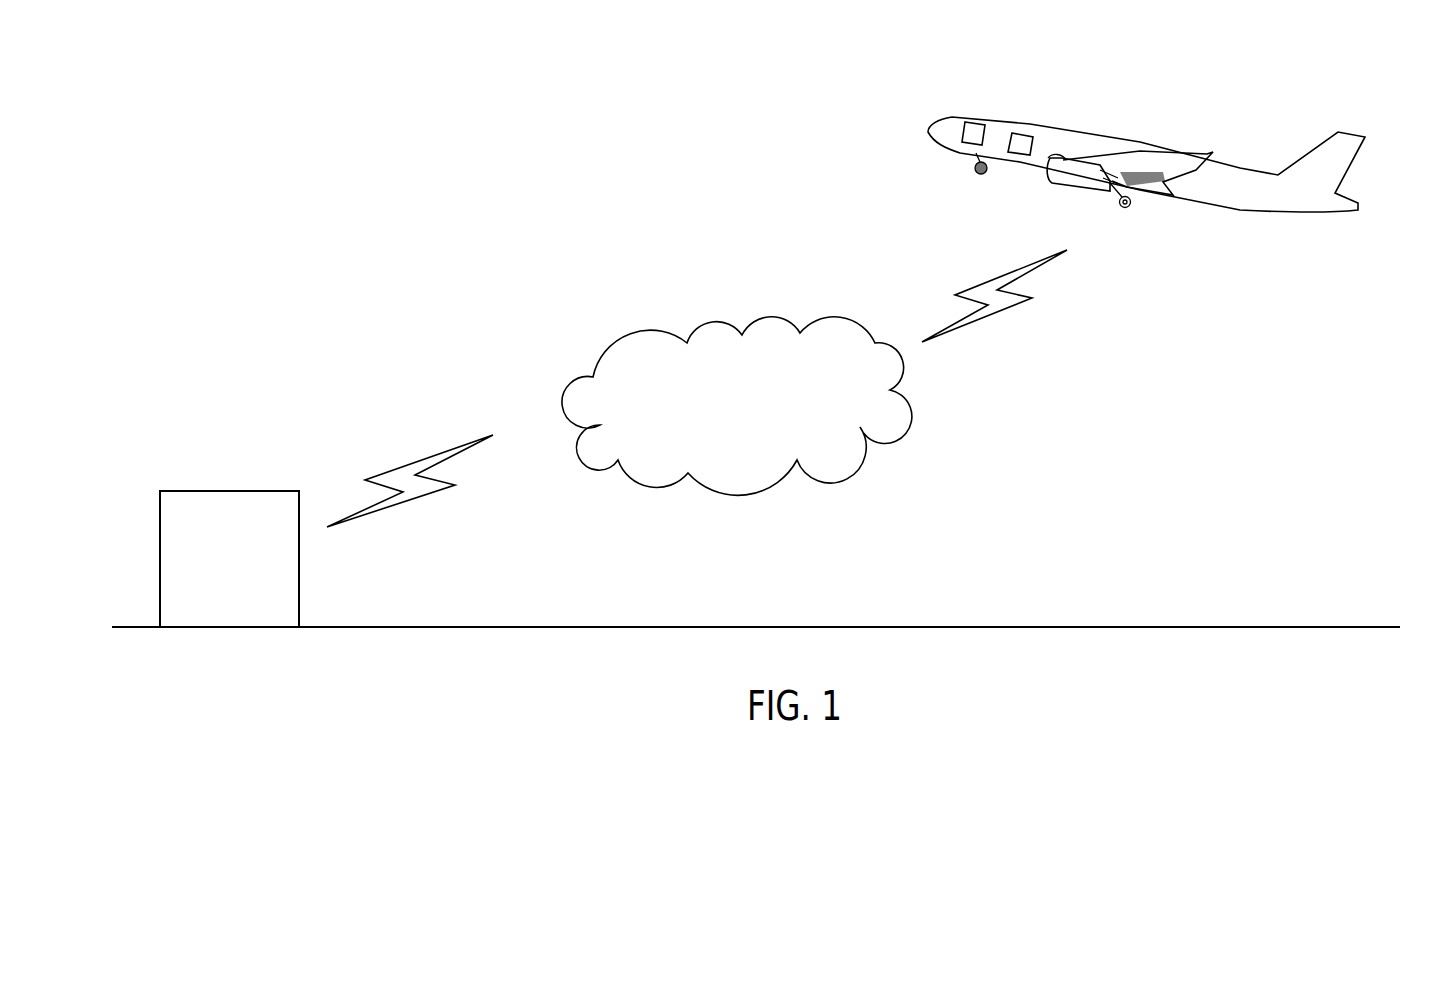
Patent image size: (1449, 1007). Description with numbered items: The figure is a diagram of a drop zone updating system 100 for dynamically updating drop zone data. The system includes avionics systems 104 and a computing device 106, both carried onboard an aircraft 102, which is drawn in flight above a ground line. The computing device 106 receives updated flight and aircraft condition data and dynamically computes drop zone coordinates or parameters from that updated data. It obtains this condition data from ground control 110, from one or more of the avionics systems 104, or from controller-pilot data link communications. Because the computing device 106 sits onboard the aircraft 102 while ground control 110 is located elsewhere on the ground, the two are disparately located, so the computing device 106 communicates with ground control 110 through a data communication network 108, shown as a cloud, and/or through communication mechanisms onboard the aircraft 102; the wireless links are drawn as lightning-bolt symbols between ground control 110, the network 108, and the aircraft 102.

The drop zone updating system 100 is at (440, 153).
The aircraft 102 is at (1366, 140).
The avionics systems 104 is at (970, 147).
The computing device 106 is at (1027, 132).
The data communication network 108 is at (760, 460).
The ground control 110 is at (223, 490).